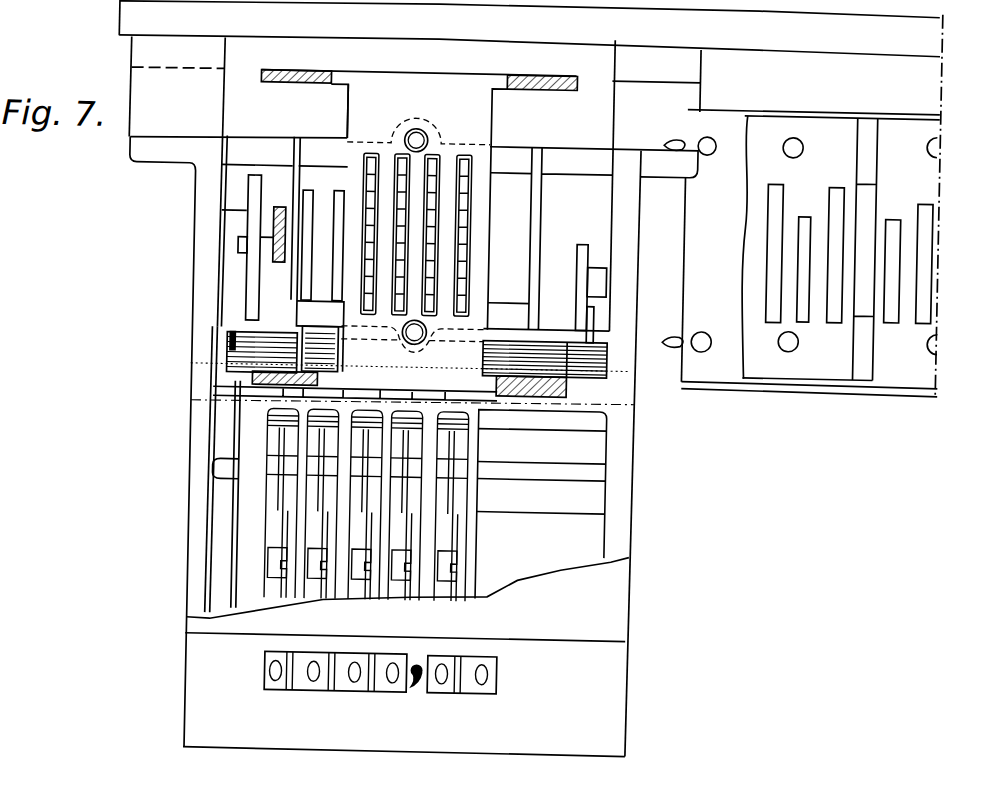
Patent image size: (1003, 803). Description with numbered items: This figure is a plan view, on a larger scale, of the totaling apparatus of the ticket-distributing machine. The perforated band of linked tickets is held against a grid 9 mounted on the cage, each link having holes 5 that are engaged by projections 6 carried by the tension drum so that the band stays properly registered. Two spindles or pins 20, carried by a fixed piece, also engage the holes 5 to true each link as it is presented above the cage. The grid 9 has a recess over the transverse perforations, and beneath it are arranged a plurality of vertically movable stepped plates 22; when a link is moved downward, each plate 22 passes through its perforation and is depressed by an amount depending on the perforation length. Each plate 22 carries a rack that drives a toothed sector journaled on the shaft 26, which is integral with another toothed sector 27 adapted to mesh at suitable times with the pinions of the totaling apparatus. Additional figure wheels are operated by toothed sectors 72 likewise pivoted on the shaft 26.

The holes 5 is at (791, 147).
The projections 6 is at (700, 136).
The grid 9 is at (407, 112).
The spindles or pins 20 is at (411, 140).
The vertically movable pieces or plates 22 is at (397, 232).
The shaft 26 is at (554, 402).
The toothed sector 27 is at (348, 529).
The toothed sectors 72 is at (300, 271).